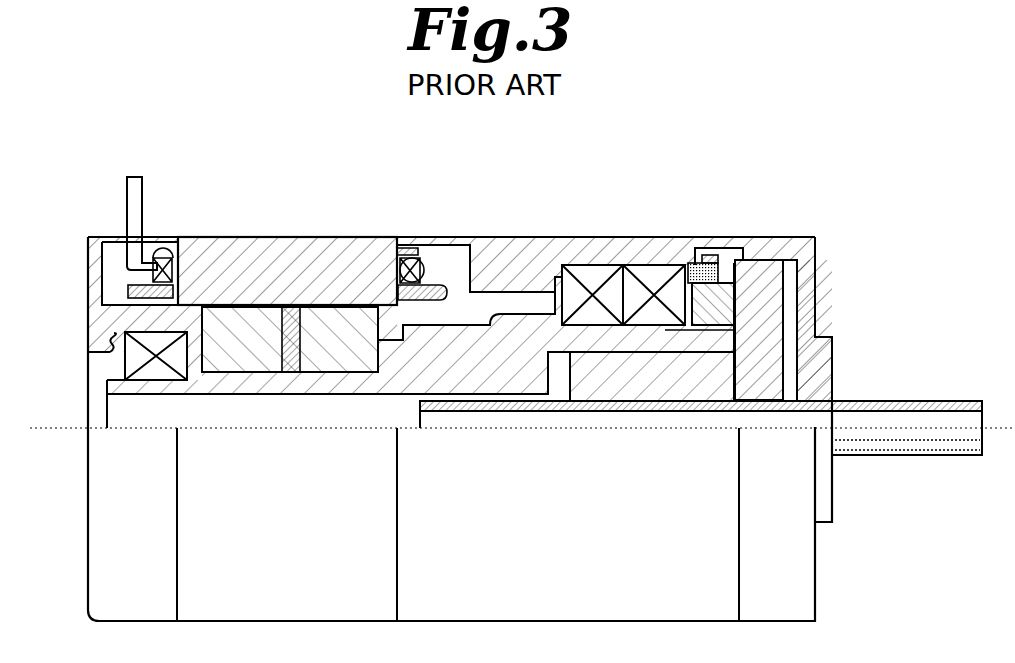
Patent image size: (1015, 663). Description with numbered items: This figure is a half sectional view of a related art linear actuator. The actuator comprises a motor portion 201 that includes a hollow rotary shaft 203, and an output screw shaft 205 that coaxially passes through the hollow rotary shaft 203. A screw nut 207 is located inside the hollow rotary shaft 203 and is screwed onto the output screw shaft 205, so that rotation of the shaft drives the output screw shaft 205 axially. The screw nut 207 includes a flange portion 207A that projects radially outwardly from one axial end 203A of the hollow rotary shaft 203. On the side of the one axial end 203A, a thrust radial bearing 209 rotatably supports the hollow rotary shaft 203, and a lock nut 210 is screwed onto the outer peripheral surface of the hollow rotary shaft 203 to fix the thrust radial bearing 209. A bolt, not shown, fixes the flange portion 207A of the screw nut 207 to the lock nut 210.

The motor portion 201 is at (232, 236).
The hollow rotary shaft 203 is at (518, 313).
The one axial end 203A is at (647, 392).
The output screw shaft 205 is at (928, 400).
The screw nut 207 is at (807, 352).
The flange portion 207A is at (760, 285).
The thrust radial bearing 209 is at (652, 268).
The lock nut 210 is at (740, 305).